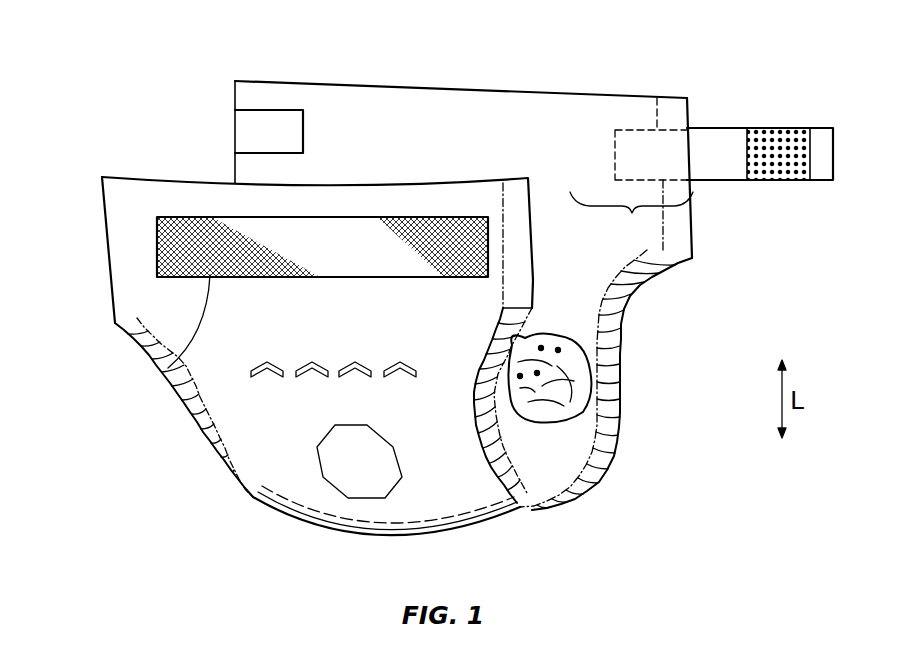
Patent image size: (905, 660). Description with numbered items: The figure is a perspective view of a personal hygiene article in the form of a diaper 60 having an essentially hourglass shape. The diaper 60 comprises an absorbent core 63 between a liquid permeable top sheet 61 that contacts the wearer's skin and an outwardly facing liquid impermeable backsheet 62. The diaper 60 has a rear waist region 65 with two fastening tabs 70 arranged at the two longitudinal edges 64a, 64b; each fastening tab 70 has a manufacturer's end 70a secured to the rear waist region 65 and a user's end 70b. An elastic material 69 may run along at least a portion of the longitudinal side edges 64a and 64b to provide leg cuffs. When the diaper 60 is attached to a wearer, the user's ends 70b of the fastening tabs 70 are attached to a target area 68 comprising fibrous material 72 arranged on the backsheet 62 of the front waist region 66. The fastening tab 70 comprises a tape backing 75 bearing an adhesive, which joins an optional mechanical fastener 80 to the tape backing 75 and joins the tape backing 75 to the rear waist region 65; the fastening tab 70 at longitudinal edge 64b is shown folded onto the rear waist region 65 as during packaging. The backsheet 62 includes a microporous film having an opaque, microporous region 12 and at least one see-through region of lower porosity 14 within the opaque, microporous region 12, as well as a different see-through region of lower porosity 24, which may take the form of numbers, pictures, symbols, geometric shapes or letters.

The opaque, microporous region 12 is at (305, 412).
The see-through region of lower porosity 14 is at (270, 372).
The see-through region of lower porosity 24 is at (360, 477).
The diaper 60 is at (168, 508).
The top sheet 61 is at (577, 293).
The backsheet 62 is at (297, 493).
The absorbent core 63 is at (570, 412).
The longitudinal edge 64a is at (695, 227).
The longitudinal edge 64b is at (237, 167).
The rear waist region 65 is at (415, 108).
The front waist region 66 is at (133, 240).
The target area 68 is at (165, 368).
The elastic material 69 is at (617, 373).
The fastening tab 70 is at (243, 130).
The manufacturer's end 70a is at (631, 174).
The user's end 70b is at (812, 180).
The fibrous material 72 is at (350, 267).
The tape backing 75 is at (715, 150).
The mechanical fastener 80 is at (785, 128).